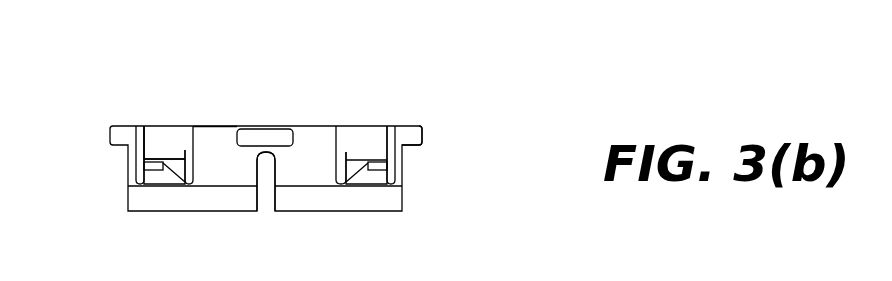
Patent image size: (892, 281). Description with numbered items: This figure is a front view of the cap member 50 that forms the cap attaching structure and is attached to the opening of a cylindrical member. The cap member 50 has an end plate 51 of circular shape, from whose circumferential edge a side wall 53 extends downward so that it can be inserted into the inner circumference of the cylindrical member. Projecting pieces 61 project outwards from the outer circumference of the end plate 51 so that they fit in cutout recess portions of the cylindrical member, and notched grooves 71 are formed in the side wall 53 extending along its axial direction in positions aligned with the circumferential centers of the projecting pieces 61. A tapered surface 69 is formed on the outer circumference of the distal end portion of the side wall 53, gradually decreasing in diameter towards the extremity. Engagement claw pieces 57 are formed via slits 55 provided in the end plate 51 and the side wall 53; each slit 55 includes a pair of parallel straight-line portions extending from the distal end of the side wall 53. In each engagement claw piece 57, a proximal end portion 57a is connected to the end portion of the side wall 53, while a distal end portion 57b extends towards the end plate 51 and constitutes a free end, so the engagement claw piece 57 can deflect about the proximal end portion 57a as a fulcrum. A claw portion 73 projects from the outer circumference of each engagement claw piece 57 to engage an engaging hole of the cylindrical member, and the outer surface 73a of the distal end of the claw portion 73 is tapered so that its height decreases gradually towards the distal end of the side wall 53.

The cap member 50 is at (309, 102).
The end plate 51 is at (207, 130).
The side wall 53 is at (323, 172).
The slit 55 is at (343, 128).
The engagement claw piece 57 is at (167, 140).
The proximal end portion 57a is at (175, 187).
The distal end portion 57b is at (158, 126).
The projecting piece 61 is at (267, 132).
The tapered surface 69 is at (223, 202).
The notched groove 71 is at (266, 198).
The claw portion 73 is at (156, 155).
The outer surface 73a is at (157, 172).